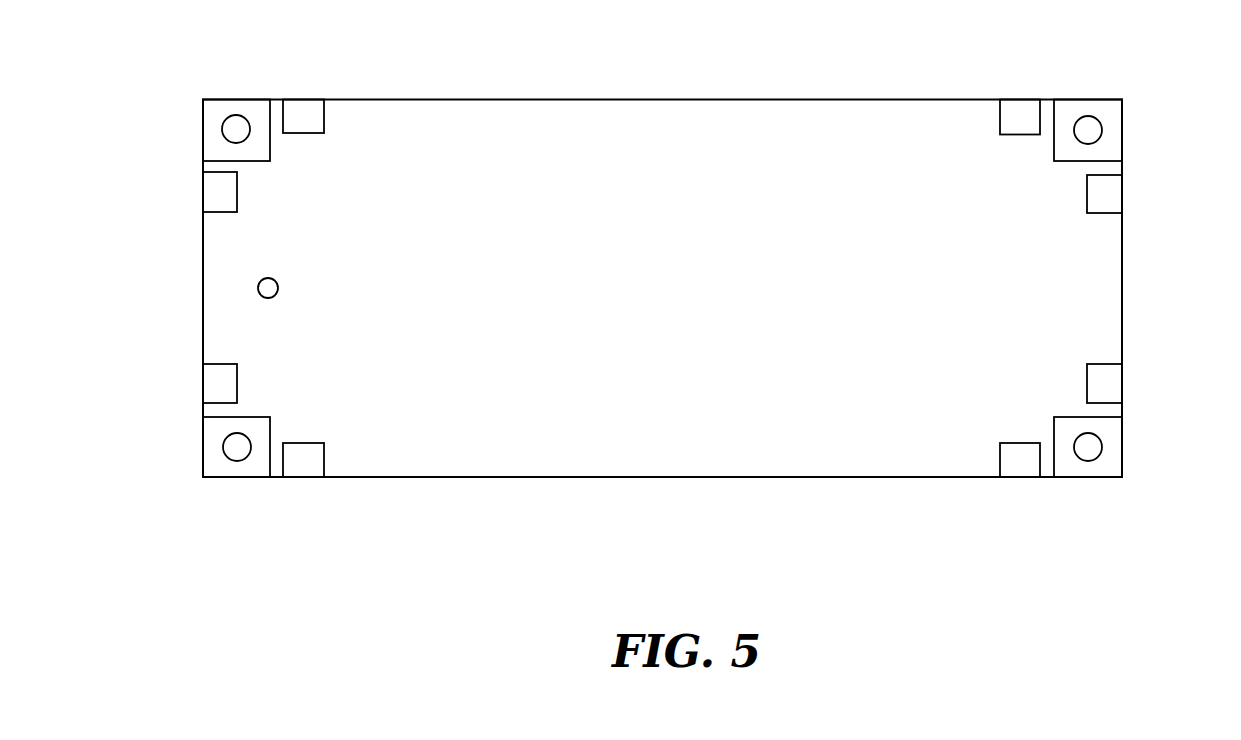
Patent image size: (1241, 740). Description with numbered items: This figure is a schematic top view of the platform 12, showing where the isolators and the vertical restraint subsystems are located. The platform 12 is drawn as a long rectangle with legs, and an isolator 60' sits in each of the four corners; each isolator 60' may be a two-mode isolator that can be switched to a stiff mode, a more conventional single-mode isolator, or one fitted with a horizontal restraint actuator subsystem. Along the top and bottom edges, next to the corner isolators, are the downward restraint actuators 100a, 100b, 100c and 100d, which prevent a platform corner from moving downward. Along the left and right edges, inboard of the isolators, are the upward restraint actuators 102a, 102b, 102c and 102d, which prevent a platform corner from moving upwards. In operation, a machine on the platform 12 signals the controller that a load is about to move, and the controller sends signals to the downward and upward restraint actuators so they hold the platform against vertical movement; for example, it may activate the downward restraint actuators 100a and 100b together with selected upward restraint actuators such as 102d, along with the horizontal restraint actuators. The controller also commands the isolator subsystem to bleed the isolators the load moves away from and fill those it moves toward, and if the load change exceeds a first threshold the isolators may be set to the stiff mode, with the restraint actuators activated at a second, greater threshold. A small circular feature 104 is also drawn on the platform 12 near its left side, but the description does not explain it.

The platform 12 is at (1080, 292).
The isolator 60' is at (662, 289).
The downward restraint actuator 100a is at (301, 108).
The downward restraint actuator 100b is at (304, 467).
The downward restraint actuator 100c is at (1022, 108).
The downward restraint actuator 100d is at (1021, 467).
The upward restraint actuator 102a is at (215, 193).
The upward restraint actuator 102b is at (215, 383).
The upward restraint actuator 102c is at (1108, 195).
The upward restraint actuator 102d is at (1108, 383).
The alignment hole 104 is at (257, 292).